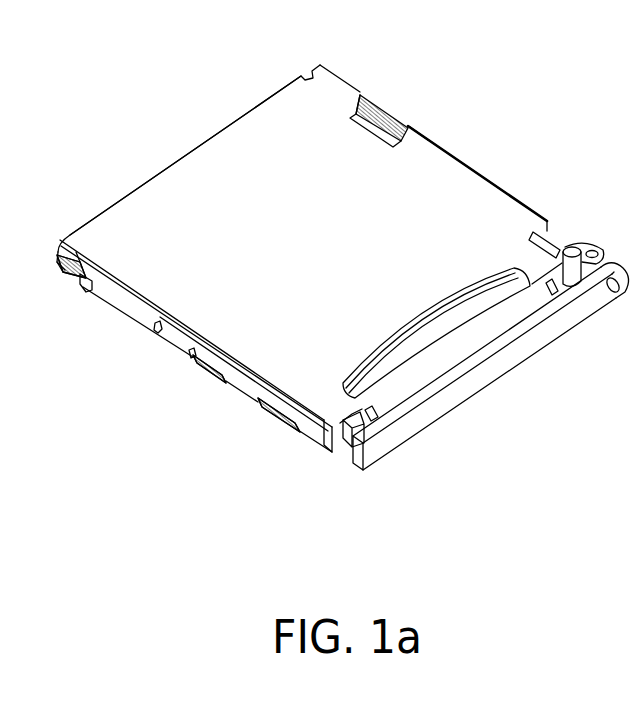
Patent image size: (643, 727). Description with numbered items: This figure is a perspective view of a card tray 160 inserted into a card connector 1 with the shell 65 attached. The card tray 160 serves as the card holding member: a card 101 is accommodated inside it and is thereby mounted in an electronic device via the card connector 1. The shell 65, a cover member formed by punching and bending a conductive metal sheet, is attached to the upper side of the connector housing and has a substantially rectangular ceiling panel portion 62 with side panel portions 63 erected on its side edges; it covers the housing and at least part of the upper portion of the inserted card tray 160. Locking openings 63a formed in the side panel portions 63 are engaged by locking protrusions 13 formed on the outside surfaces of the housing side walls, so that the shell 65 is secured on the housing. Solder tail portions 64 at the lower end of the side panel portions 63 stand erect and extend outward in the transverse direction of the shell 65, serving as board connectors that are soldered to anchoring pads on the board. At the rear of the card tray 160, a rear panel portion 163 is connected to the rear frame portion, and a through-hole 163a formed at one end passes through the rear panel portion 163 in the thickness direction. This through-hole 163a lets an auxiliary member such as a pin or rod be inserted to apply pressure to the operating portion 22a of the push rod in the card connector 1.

The card connector 1 is at (354, 57).
The locking protrusion 13 is at (62, 278).
The operating portion 22a is at (600, 250).
The ceiling panel portion 62 is at (478, 183).
The side panel portion 63 is at (150, 322).
The locking opening 63a is at (80, 285).
The solder tail portion 64 is at (199, 373).
The shell 65 is at (433, 137).
The card 101 is at (447, 331).
The card tray 160 is at (392, 471).
The rear panel portion 163 is at (465, 410).
The through-hole 163a is at (612, 292).